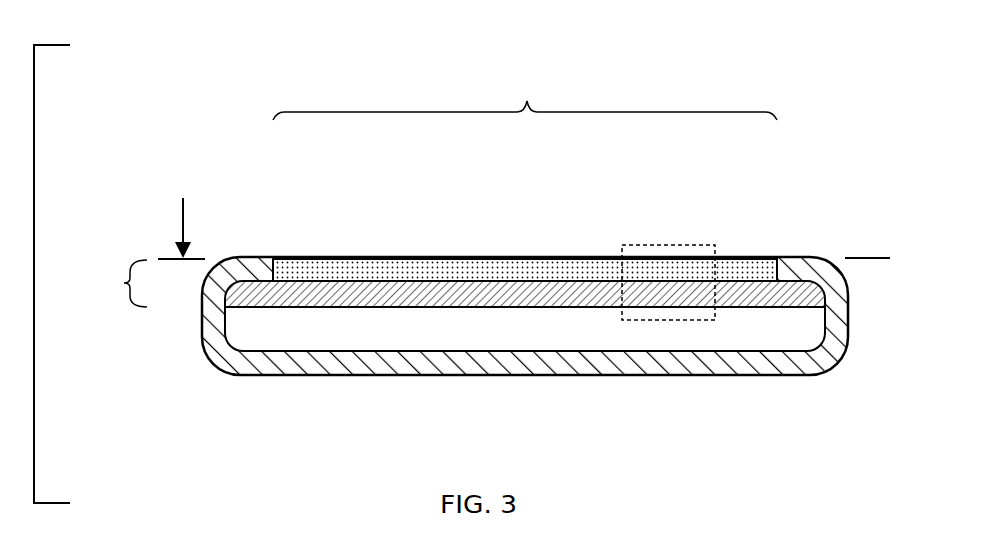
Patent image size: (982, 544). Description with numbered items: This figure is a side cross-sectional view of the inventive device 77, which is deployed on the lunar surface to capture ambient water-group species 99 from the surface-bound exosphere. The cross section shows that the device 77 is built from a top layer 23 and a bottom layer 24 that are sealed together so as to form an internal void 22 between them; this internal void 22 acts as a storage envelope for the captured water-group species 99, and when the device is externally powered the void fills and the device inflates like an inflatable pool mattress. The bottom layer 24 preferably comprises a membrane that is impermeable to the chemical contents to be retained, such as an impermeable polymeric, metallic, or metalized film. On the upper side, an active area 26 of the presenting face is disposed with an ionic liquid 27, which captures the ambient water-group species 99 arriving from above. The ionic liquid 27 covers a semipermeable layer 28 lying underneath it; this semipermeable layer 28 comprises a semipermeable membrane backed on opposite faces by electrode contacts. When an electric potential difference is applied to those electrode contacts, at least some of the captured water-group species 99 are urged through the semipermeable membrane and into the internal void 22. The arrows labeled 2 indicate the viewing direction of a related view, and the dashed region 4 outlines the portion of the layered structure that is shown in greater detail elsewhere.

The viewing direction arrow 2 is at (869, 244).
The detail region 4 is at (680, 245).
The internal void 22 is at (545, 343).
The top layer 23 is at (123, 283).
The bottom layer 24 is at (383, 375).
The active area 26 is at (525, 94).
The ionic liquid 27 is at (340, 270).
The semipermeable layer 28 is at (435, 293).
The device 77 is at (222, 153).
The water-group species 99 is at (543, 242).